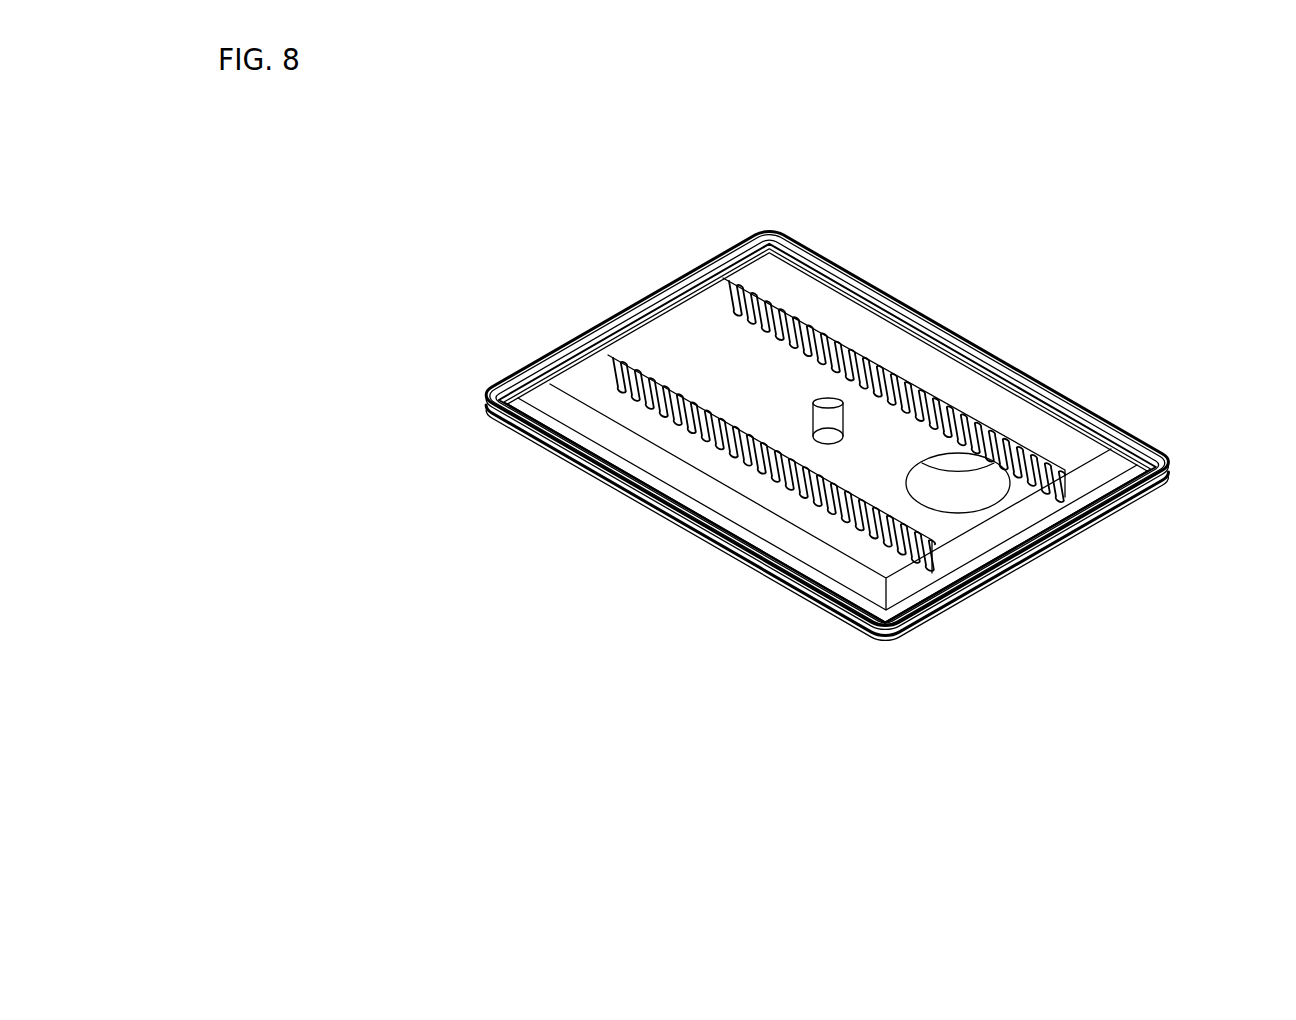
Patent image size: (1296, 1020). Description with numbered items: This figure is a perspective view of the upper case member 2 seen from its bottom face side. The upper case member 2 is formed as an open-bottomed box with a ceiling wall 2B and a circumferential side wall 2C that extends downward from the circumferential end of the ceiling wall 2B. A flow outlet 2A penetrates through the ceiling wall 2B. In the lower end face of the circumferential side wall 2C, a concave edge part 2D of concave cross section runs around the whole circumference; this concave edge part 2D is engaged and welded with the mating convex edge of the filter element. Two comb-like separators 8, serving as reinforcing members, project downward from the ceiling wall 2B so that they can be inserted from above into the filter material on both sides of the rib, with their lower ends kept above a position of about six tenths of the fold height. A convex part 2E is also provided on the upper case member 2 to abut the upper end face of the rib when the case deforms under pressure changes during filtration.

The upper case member 2 is at (1132, 237).
The flow outlet 2A is at (968, 492).
The ceiling wall 2B is at (688, 327).
The circumferential side wall 2C is at (918, 312).
The concave edge part 2D is at (1150, 492).
The convex part 2E is at (837, 417).
The comb-like separator 8 is at (957, 410).